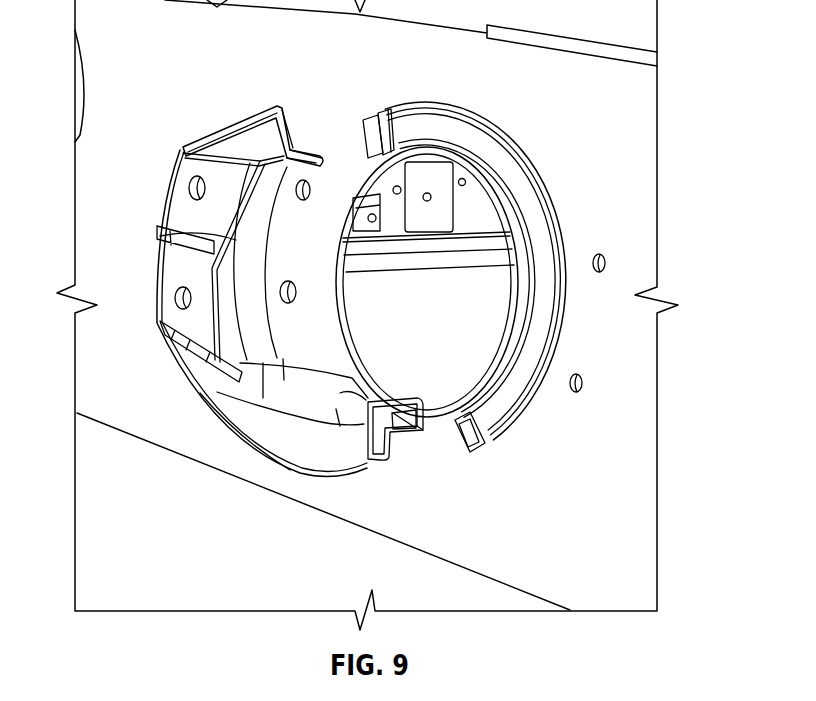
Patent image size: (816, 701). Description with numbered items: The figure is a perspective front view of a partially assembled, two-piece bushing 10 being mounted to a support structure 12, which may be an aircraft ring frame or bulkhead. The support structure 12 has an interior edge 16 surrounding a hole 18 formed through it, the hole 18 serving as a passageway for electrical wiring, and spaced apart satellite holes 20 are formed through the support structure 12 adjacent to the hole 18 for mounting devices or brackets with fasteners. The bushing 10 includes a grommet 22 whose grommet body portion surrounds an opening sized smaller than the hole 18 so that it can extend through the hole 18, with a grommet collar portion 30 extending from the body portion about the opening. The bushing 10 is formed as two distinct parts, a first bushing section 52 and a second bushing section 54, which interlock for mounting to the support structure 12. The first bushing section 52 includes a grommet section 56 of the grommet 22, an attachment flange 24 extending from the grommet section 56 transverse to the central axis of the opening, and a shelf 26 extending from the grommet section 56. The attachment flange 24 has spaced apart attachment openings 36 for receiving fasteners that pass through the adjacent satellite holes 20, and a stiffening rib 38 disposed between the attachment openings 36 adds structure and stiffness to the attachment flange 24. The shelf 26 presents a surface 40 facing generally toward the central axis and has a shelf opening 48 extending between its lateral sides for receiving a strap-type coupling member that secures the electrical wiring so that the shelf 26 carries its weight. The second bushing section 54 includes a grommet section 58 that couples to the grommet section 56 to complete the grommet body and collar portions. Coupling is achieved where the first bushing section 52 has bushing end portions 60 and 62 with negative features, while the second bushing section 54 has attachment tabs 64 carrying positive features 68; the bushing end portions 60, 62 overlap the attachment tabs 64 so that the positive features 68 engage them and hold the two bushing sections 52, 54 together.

The bushing 10 is at (527, 187).
The support structure 12 is at (643, 467).
The interior edge 16 is at (350, 314).
The hole 18 is at (465, 289).
The satellite holes 20 is at (310, 183).
The grommet 22 is at (525, 222).
The attachment flange 24 is at (170, 273).
The shelf 26 is at (378, 410).
The grommet collar portion 30 is at (233, 240).
The attachment openings 36 is at (187, 183).
The stiffening rib 38 is at (158, 244).
The surface 40 is at (360, 392).
The shelf opening 48 is at (424, 432).
The bushing section 52 is at (267, 128).
The bushing section 54 is at (490, 157).
The grommet section 56 is at (217, 398).
The grommet section 58 is at (517, 362).
The bushing end portion 60 is at (293, 125).
The bushing end portion 62 is at (400, 444).
The attachment tabs 64 is at (368, 115).
The positive features 68 is at (370, 142).